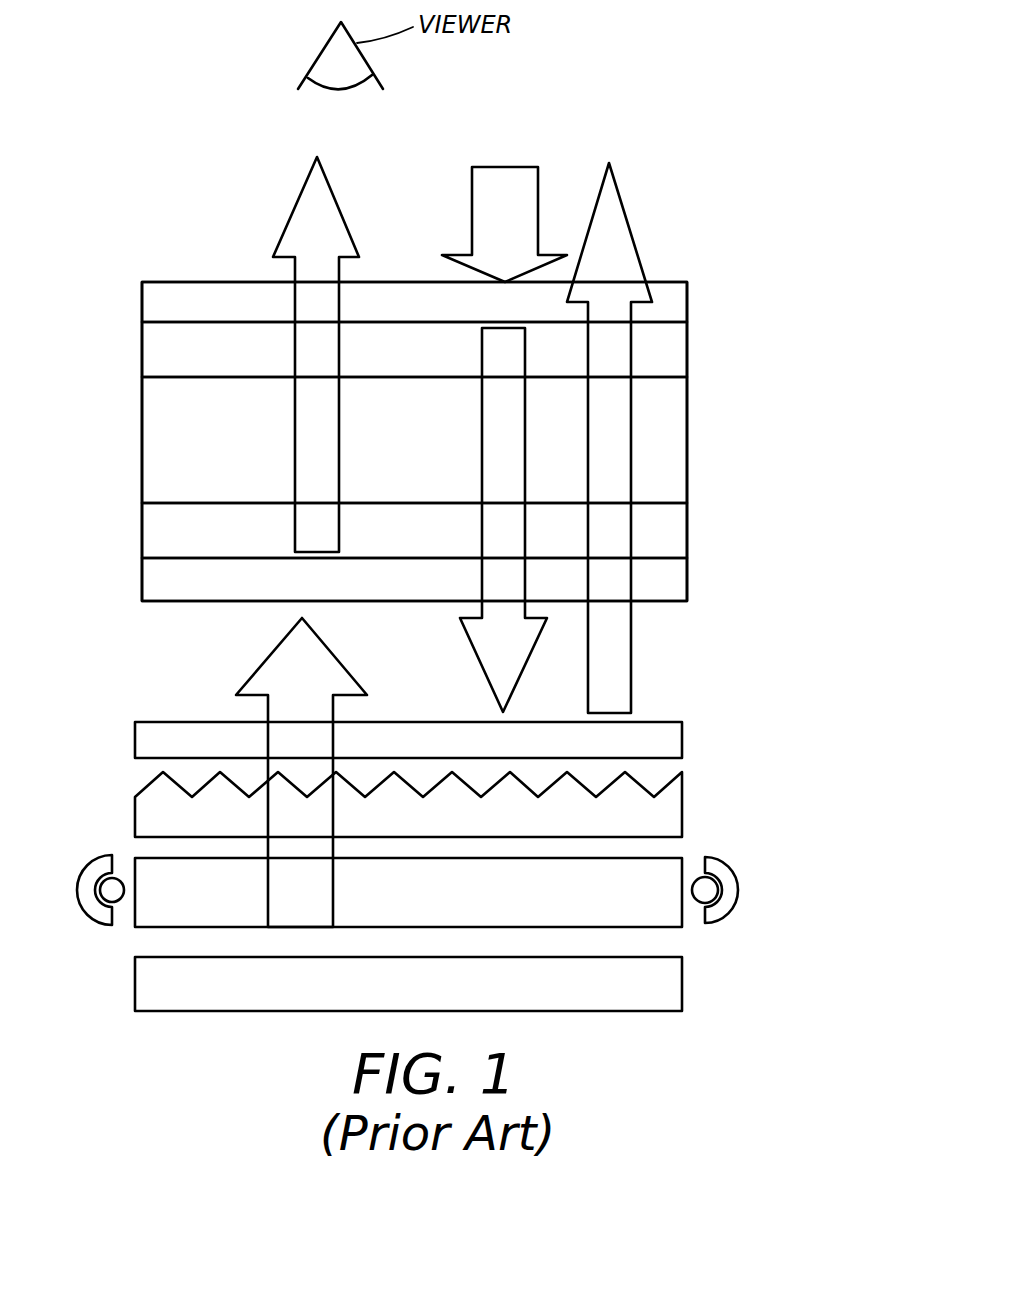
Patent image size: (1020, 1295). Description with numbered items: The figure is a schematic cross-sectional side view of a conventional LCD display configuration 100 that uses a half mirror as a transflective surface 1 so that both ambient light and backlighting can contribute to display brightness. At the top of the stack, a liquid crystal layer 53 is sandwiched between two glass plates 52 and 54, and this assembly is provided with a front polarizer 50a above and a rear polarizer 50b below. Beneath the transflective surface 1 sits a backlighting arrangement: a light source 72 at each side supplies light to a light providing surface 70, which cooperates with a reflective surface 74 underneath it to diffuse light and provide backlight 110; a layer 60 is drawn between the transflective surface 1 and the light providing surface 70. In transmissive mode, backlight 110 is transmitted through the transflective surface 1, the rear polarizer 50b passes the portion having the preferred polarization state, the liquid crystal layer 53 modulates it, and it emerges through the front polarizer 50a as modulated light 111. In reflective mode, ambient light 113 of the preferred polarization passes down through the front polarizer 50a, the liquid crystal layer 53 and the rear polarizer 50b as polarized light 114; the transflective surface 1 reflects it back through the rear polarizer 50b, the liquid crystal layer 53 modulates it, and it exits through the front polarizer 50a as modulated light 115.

The LCD display configuration 100 is at (725, 215).
The front polarizer 50a is at (688, 300).
The glass plate 52 is at (688, 350).
The liquid crystal layer 53 is at (688, 438).
The glass plate 54 is at (688, 528).
The rear polarizer 50b is at (688, 578).
The modulated light 111 is at (288, 220).
The ambient light 113 is at (470, 200).
The polarized light 114 is at (475, 652).
The modulated light 115 is at (617, 185).
The backlight 110 is at (258, 668).
The transflective surface 1 is at (683, 730).
The prism sheet 60 is at (683, 805).
The light providing surface 70 is at (683, 857).
The light source 72 is at (738, 890).
The reflective surface 74 is at (683, 985).